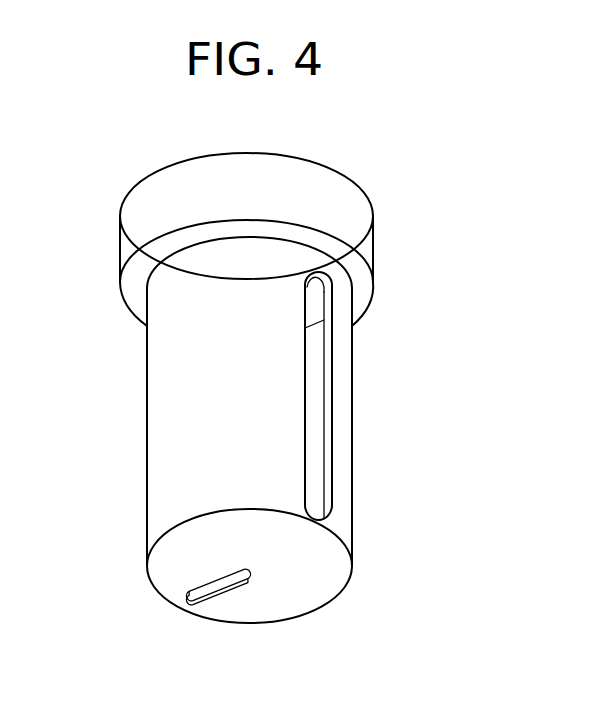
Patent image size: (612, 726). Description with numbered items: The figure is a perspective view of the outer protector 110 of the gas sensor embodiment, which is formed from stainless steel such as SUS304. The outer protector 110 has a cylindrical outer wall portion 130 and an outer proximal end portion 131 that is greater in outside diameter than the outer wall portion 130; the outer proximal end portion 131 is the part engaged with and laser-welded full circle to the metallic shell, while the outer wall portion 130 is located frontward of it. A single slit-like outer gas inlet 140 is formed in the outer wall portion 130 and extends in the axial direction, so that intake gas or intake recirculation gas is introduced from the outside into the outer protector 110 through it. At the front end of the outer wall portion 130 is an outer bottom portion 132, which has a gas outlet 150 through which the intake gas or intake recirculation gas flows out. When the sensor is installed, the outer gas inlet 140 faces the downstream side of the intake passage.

The outer protector 110 is at (249, 462).
The outer wall portion 130 is at (213, 304).
The outer proximal end portion 131 is at (148, 232).
The outer bottom portion 132 is at (289, 597).
The outer gas inlet 140 is at (328, 462).
The gas outlet 150 is at (207, 613).